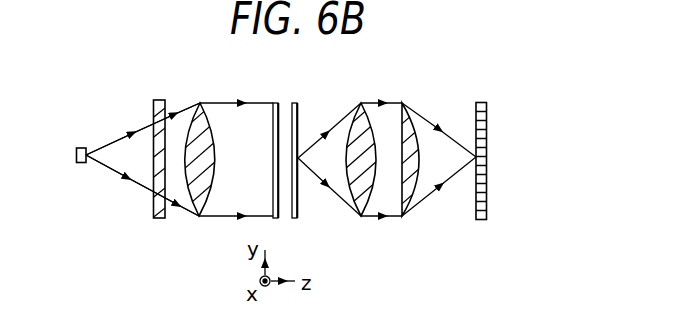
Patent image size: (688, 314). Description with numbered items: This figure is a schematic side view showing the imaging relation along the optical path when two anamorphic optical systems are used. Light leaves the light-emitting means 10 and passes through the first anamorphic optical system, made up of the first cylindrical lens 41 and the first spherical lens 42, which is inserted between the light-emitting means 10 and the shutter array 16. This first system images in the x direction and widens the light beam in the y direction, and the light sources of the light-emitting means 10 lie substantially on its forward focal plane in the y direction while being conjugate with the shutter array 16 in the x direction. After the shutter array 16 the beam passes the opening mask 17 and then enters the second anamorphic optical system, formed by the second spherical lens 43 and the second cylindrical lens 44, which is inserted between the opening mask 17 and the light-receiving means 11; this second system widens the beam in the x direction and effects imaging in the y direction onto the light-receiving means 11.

The light-emitting means 10 is at (78, 148).
The first cylindrical lens 41 is at (158, 100).
The first spherical lens 42 is at (200, 103).
The shutter array 16 is at (274, 103).
The opening mask 17 is at (294, 103).
The second spherical lens 43 is at (361, 103).
The second cylindrical lens 44 is at (402, 103).
The light-receiving means 11 is at (481, 102).